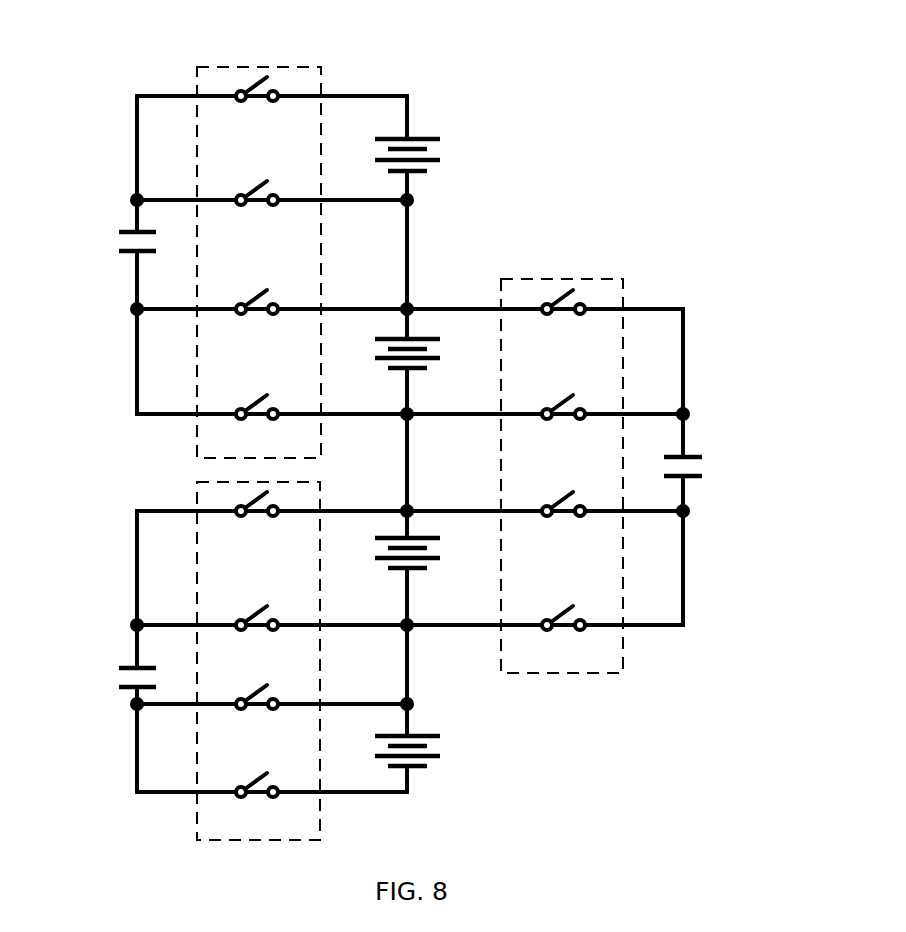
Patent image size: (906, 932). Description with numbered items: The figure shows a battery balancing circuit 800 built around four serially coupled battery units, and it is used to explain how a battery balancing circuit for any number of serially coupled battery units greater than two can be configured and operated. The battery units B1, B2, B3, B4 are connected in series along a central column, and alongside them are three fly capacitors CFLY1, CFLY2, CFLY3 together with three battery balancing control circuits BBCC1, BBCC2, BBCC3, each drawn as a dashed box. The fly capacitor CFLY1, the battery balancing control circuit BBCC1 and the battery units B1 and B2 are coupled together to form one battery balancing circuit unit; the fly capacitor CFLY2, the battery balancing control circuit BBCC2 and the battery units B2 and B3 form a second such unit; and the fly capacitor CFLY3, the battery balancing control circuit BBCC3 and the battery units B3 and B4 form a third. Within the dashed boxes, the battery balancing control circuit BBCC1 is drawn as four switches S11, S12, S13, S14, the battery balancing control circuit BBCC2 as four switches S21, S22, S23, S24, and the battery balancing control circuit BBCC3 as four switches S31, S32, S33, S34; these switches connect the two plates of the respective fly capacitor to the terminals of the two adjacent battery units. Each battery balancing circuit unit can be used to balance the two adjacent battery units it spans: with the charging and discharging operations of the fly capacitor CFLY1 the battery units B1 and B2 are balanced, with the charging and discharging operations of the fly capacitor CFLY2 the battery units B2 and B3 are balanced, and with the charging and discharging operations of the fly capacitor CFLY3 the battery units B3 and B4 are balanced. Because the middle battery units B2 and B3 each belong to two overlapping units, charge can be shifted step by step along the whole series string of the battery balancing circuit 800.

The battery balancing circuit 800 is at (98, 71).
The battery balancing control circuit BBCC1 is at (305, 66).
The battery balancing control circuit BBCC2 is at (588, 279).
The battery balancing control circuit BBCC3 is at (197, 505).
The switch S11 is at (257, 108).
The switch S12 is at (257, 217).
The switch S13 is at (257, 323).
The switch S14 is at (257, 422).
The switch S21 is at (567, 321).
The switch S22 is at (567, 426).
The switch S23 is at (567, 530).
The switch S24 is at (567, 636).
The switch S31 is at (264, 527).
The switch S32 is at (264, 641).
The switch S33 is at (264, 719).
The switch S34 is at (264, 803).
The battery unit B1 is at (431, 155).
The battery unit B2 is at (431, 356).
The battery unit B3 is at (431, 551).
The battery unit B4 is at (431, 752).
The fly capacitor CFLY1 is at (97, 251).
The fly capacitor CFLY2 is at (716, 467).
The fly capacitor CFLY3 is at (97, 678).